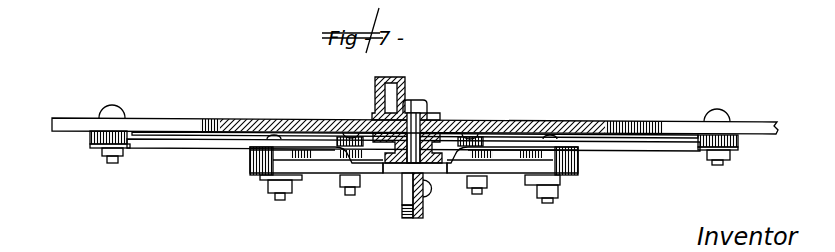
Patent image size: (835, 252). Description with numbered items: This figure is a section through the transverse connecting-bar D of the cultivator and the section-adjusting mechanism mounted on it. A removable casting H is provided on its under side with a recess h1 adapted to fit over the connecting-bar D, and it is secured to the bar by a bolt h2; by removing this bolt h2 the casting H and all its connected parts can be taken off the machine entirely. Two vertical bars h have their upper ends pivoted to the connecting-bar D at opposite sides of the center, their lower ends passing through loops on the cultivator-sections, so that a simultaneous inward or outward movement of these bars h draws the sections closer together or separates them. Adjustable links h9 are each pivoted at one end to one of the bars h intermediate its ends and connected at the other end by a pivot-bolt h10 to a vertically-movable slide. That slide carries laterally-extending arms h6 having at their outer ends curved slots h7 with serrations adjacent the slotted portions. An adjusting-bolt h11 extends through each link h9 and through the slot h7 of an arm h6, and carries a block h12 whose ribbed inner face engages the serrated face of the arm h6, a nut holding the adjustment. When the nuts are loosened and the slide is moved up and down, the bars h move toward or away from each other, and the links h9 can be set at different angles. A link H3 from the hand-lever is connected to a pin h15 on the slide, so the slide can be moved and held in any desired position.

The transverse connecting-bar D is at (541, 128).
The vertical bars h is at (122, 131).
The recess h1 is at (455, 118).
The bolt h2 is at (419, 101).
The laterally-extending arms h6 is at (523, 170).
The curved slots h7 is at (549, 198).
The adjustable links h9 is at (665, 152).
The pivot-bolt h10 is at (479, 199).
The adjusting-bolt h11 is at (280, 202).
The block h12 is at (596, 190).
The pin h15 is at (430, 191).
The removable casting H is at (380, 96).
The link H3 is at (418, 212).